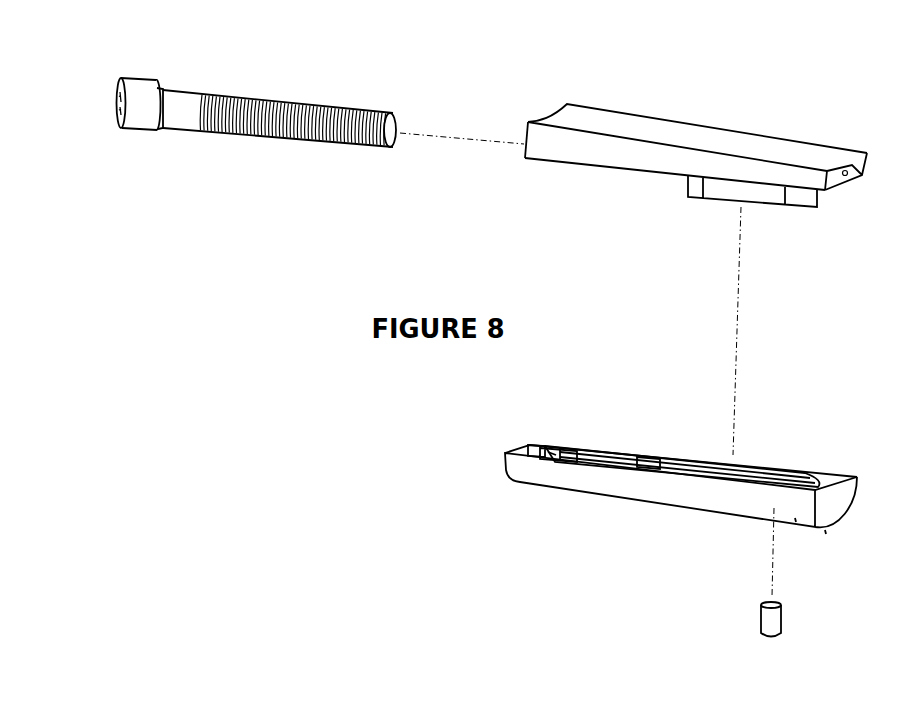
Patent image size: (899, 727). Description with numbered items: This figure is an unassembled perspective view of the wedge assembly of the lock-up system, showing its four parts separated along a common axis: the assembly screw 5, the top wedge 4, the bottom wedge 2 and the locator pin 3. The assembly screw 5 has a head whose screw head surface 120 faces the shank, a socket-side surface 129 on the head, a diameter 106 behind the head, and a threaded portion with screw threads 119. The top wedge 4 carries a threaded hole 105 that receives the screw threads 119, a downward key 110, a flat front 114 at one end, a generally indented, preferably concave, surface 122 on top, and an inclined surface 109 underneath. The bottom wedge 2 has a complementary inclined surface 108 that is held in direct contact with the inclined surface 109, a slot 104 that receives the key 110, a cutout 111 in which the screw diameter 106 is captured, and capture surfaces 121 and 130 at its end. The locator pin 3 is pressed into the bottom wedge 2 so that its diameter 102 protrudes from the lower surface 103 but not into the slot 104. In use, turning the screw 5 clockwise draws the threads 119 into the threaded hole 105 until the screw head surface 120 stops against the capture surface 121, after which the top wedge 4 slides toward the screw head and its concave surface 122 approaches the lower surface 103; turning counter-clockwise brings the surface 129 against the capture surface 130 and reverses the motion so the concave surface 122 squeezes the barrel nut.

The bottom wedge 2 is at (678, 491).
The locator pin 3 is at (738, 629).
The top wedge 4 is at (672, 166).
The assembly screw 5 is at (224, 116).
The diameter of locator pin 102 is at (770, 617).
The lower surface of bottom wedge 103 is at (868, 503).
The slot 104 is at (750, 470).
The threaded hole 105 is at (821, 195).
The diameter of assembly screw 106 is at (107, 80).
The inclined surface of bottom wedge 108 is at (728, 484).
The inclined surface of top wedge 109 is at (655, 177).
The key 110 is at (758, 197).
The cutout 111 is at (553, 462).
The flat front of top wedge 114 is at (525, 132).
The screw threads 119 is at (307, 140).
The screw head surface 120 is at (168, 86).
The capture surface of bottom wedge 121 is at (570, 452).
The concave surface of top wedge 122 is at (672, 133).
The surface of assembly screw 129 is at (117, 108).
The capture surface of bottom wedge 130 is at (556, 450).